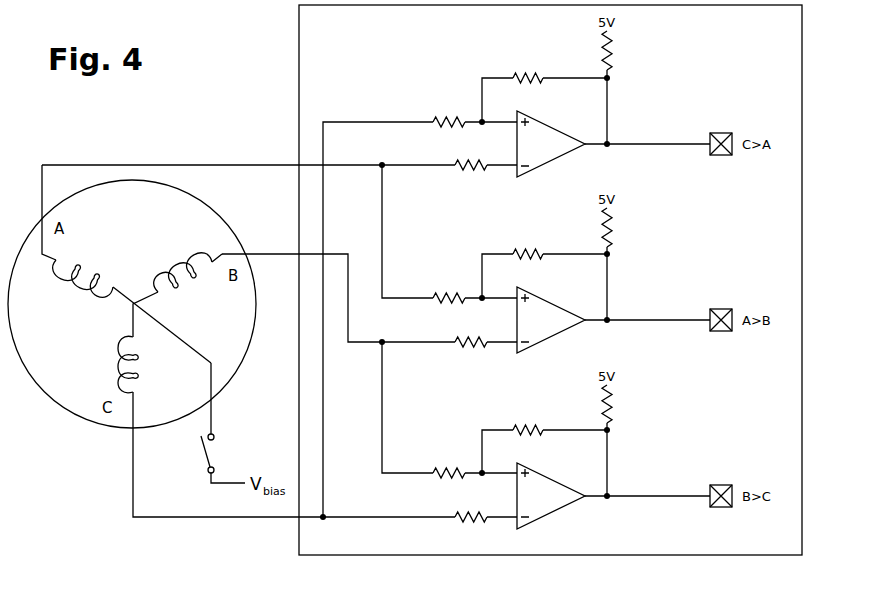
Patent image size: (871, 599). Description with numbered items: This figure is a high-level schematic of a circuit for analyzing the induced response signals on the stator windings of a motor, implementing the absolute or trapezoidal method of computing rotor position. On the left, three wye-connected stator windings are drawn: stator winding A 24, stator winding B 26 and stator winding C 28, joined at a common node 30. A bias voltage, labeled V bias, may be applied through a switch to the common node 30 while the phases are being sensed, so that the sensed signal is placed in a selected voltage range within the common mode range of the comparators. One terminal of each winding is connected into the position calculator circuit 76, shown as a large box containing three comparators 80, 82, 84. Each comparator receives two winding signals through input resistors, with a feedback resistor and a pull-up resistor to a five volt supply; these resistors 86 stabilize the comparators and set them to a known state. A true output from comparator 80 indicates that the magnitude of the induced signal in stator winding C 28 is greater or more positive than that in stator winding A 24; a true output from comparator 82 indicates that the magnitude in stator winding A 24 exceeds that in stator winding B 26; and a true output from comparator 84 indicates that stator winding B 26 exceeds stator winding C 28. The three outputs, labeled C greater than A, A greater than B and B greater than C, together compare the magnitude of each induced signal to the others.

The stator winding A 24 is at (95, 258).
The stator winding B 26 is at (197, 273).
The stator winding C 28 is at (115, 340).
The common node 30 is at (131, 304).
The position calculator circuit 76 is at (299, 82).
The comparator 80 is at (557, 159).
The comparator 82 is at (557, 334).
The comparator 84 is at (557, 509).
The resistors 86 is at (516, 74).